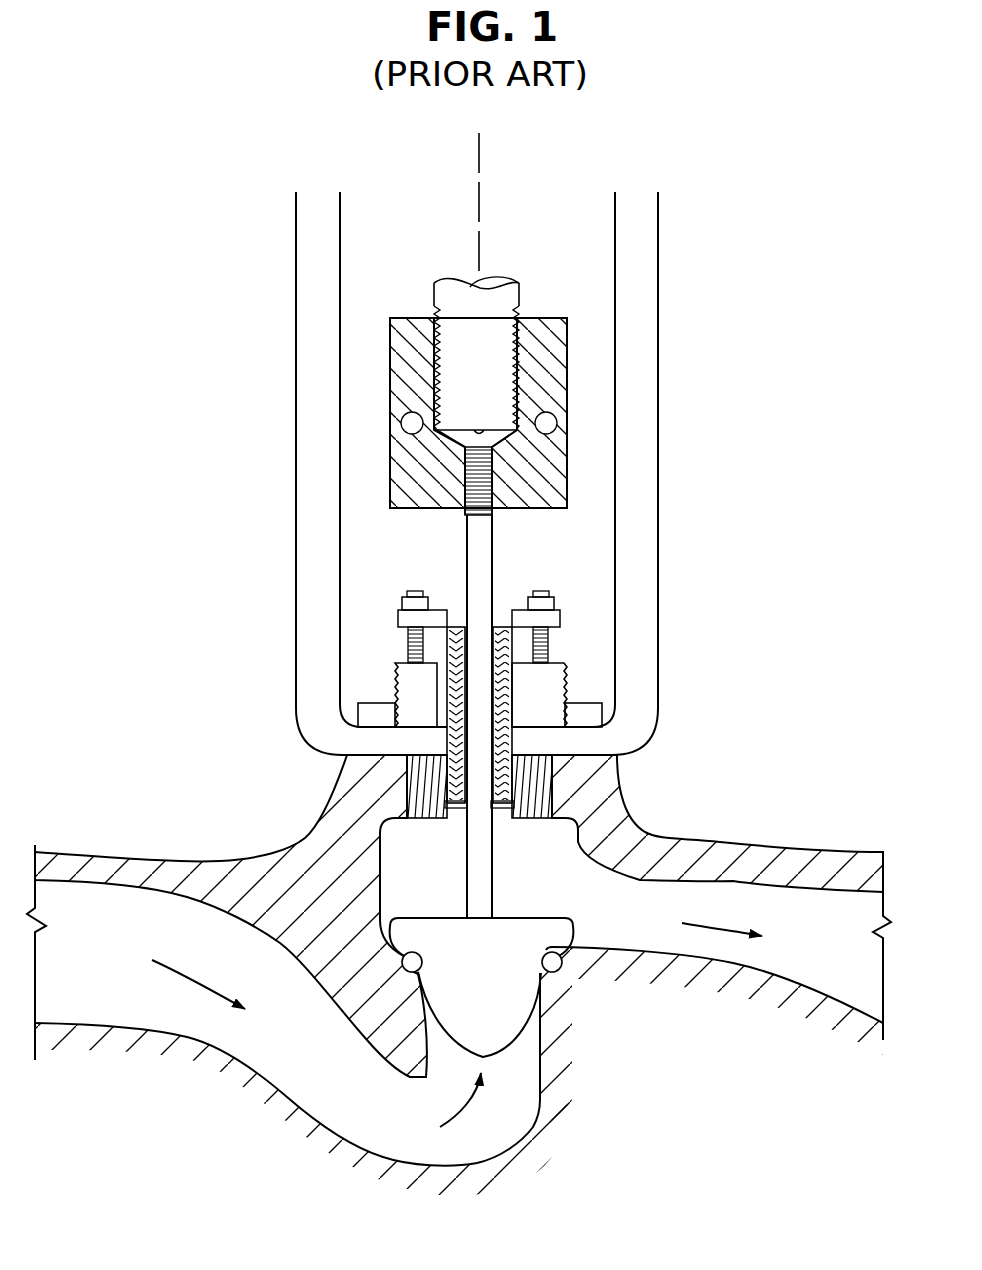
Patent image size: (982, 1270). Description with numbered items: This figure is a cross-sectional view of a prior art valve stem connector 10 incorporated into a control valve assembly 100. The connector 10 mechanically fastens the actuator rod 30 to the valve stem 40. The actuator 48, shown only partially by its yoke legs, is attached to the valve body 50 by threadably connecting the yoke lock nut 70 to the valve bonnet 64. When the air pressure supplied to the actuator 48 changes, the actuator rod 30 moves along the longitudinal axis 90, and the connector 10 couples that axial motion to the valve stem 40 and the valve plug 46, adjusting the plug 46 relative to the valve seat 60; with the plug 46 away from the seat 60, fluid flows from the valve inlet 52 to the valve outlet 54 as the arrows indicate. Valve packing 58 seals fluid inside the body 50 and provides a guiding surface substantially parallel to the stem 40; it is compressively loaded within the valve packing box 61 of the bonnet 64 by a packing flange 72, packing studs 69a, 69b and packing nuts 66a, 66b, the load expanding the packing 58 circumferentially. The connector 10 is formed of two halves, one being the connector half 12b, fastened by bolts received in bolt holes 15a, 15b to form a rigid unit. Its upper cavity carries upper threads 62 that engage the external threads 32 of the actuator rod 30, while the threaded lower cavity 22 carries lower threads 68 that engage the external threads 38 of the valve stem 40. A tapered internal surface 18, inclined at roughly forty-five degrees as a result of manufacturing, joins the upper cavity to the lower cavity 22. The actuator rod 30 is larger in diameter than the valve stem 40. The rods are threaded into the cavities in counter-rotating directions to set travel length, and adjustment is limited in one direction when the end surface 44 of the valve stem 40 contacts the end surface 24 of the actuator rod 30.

The valve assembly 100 is at (428, 473).
The valve stem connector 10 is at (476, 415).
The connector half 12b is at (403, 327).
The bolt hole 15a is at (402, 430).
The bolt hole 15b is at (556, 424).
The tapered internal surface 18 is at (556, 472).
The threaded lower cavity 22 is at (567, 508).
The end surface of the actuator rod 24 is at (481, 429).
The actuator rod 30 is at (474, 327).
The external threads 32 is at (518, 351).
The external threads 38 is at (487, 503).
The valve stem 40 is at (483, 557).
The end surface of the valve stem 44 is at (485, 457).
The valve plug 46 is at (522, 918).
The actuator 48 is at (660, 490).
The valve body 50 is at (677, 837).
The valve inlet 52 is at (136, 952).
The valve outlet 54 is at (786, 946).
The valve packing 58 is at (535, 745).
The valve seat 60 is at (401, 962).
The valve packing box 61 is at (555, 790).
The upper threads 62 is at (432, 348).
The valve bonnet 64 is at (355, 805).
The packing nut 66a is at (401, 604).
The packing nut 66b is at (556, 604).
The lower threads 68 is at (502, 492).
The packing stud 69a is at (407, 648).
The packing stud 69b is at (548, 653).
The yoke lock nut 70 is at (365, 703).
The packing flange 72 is at (558, 620).
The longitudinal axis 90 is at (481, 180).